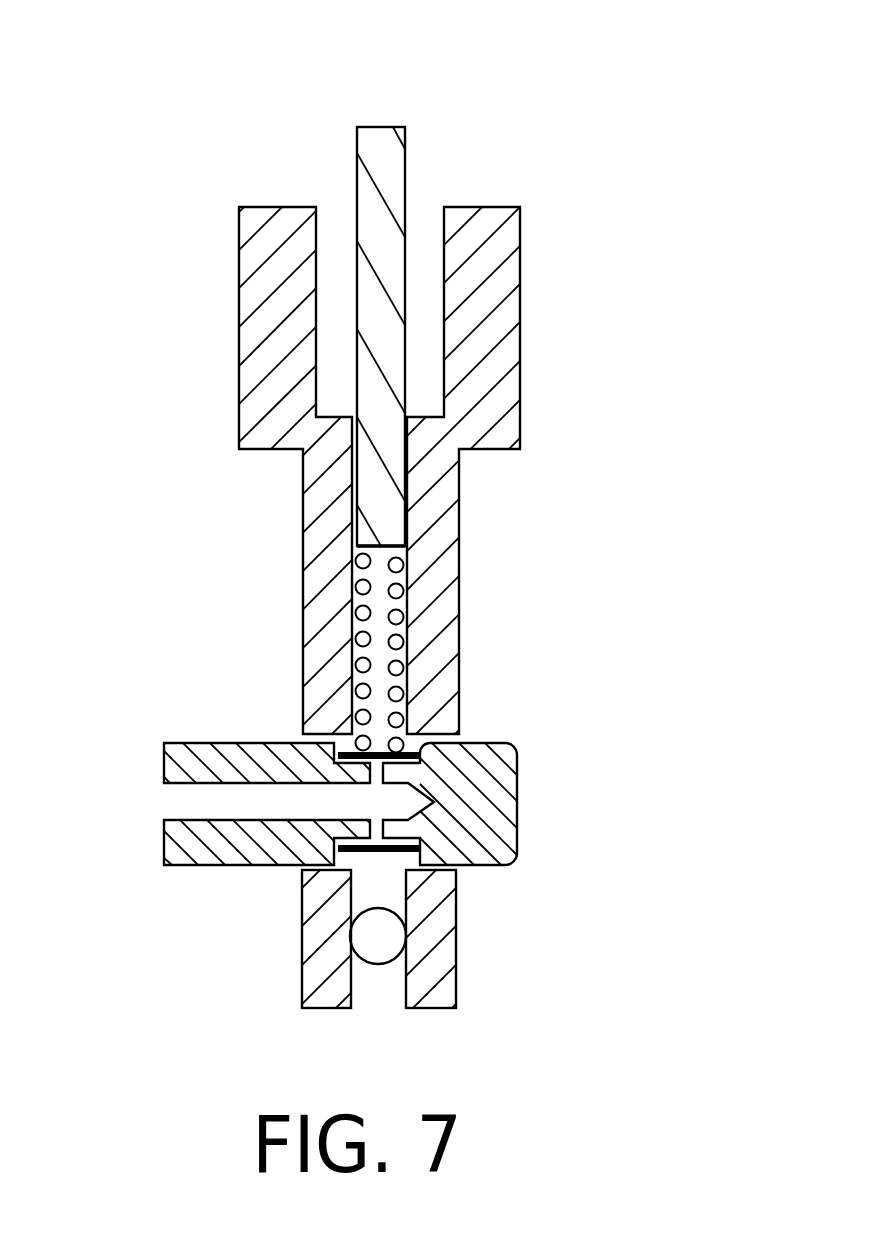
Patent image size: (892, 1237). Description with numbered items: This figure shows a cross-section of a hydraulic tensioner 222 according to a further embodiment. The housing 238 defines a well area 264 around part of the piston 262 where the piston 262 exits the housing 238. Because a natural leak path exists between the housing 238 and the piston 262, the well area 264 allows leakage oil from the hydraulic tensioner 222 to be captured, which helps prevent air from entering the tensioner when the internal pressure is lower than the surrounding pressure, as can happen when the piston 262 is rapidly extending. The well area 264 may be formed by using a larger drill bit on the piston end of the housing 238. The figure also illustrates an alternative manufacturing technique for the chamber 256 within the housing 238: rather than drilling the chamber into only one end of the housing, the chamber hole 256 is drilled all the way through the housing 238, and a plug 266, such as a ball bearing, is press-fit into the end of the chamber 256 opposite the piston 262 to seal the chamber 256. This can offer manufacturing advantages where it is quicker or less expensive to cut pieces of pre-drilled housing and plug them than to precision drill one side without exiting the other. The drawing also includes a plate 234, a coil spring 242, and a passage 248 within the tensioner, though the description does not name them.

The hydraulic tensioner 222 is at (629, 76).
The seat plate 234 is at (222, 742).
The housing 238 is at (458, 566).
The spring 242 is at (363, 610).
The passage 248 is at (197, 803).
The chamber 256 is at (380, 697).
The piston 262 is at (390, 127).
The well area 264 is at (337, 256).
The plug 266 is at (372, 948).